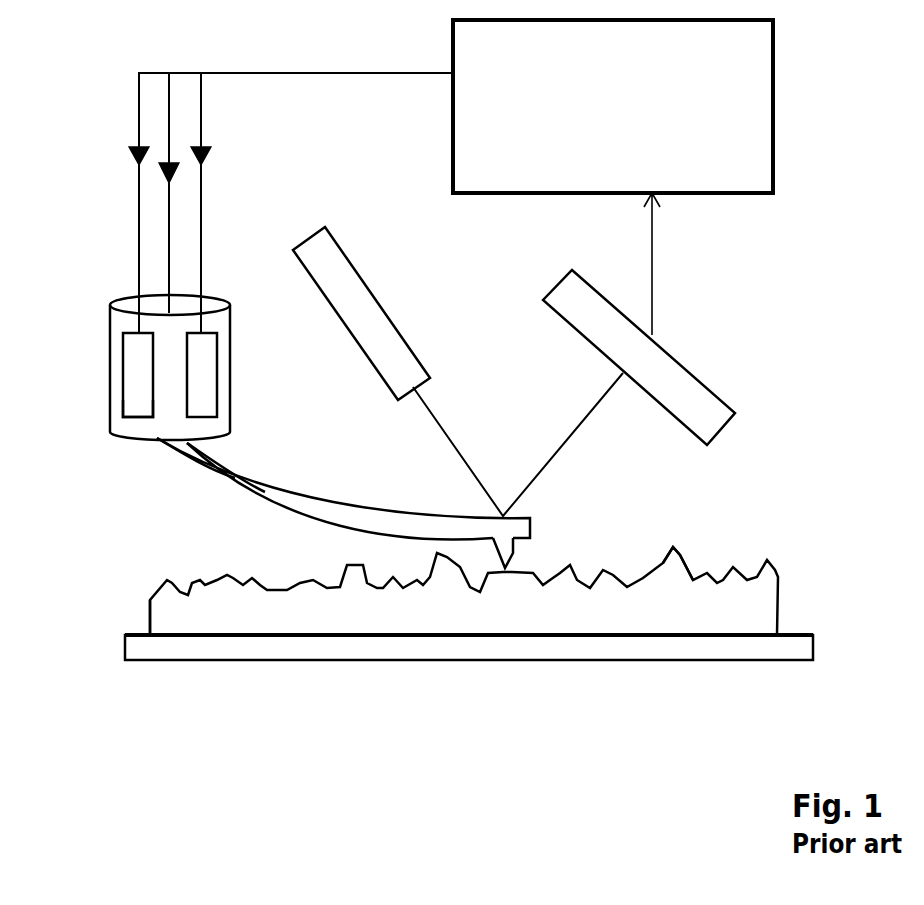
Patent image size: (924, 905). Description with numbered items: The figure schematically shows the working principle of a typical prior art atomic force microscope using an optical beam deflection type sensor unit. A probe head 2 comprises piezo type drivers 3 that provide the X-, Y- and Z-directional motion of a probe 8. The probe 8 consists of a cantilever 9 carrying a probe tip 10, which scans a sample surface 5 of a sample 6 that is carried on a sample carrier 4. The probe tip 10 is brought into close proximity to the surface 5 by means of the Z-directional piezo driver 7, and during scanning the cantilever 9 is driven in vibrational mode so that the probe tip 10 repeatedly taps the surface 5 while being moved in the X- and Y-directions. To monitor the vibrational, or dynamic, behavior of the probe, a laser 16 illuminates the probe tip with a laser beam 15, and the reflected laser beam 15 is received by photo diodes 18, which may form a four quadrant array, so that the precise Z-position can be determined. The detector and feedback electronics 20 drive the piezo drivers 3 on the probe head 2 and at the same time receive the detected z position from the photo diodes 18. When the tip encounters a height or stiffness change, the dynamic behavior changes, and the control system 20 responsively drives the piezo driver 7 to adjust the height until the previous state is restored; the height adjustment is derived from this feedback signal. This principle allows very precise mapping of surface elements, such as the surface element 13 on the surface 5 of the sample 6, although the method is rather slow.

The probe head 2 is at (109, 335).
The piezo type drivers 3 is at (203, 373).
The sample carrier 4 is at (347, 660).
The sample surface 5 is at (283, 585).
The sample 6 is at (172, 617).
The Z-directional piezo driver 7 is at (128, 405).
The probe 8 is at (185, 465).
The cantilever 9 is at (310, 505).
The probe tip 10 is at (513, 553).
The surface element 13 is at (680, 558).
The laser beam 15 is at (450, 425).
The laser 16 is at (390, 317).
The photo diodes 18 is at (557, 292).
The detector and feedback electronics 20 is at (773, 103).